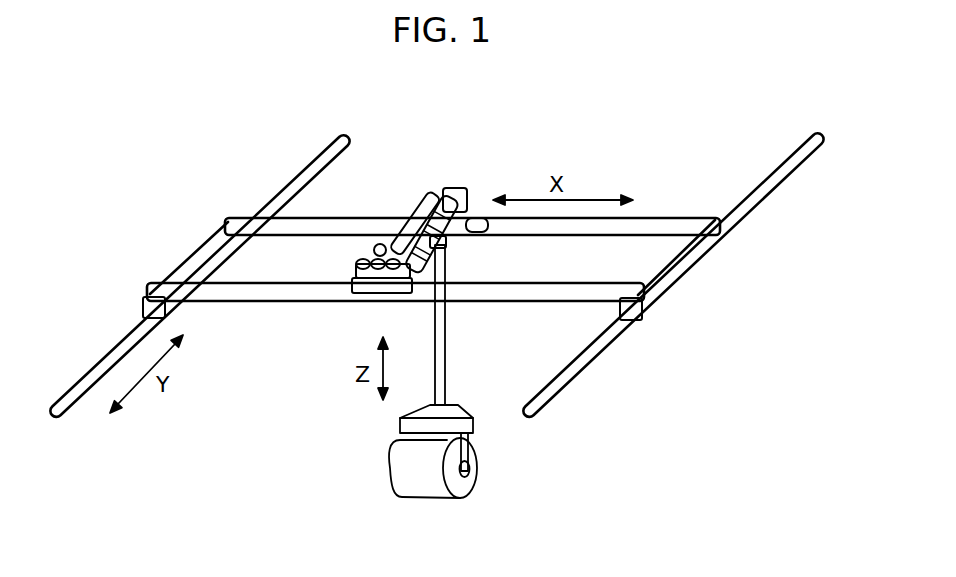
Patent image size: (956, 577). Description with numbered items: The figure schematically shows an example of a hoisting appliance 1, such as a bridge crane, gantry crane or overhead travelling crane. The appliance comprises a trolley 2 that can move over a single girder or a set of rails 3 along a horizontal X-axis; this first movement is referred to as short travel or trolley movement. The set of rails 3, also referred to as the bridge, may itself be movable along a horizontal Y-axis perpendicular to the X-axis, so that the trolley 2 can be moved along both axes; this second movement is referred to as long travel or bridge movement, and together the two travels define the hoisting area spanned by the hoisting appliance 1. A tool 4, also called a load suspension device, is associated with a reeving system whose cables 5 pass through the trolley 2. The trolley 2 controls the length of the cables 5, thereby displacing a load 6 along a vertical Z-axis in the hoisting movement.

The hoisting appliance 1 is at (147, 202).
The trolley 2 is at (425, 202).
The set of rails 3 is at (645, 225).
The tool 4 is at (400, 425).
The cables 5 is at (466, 373).
The load 6 is at (432, 477).